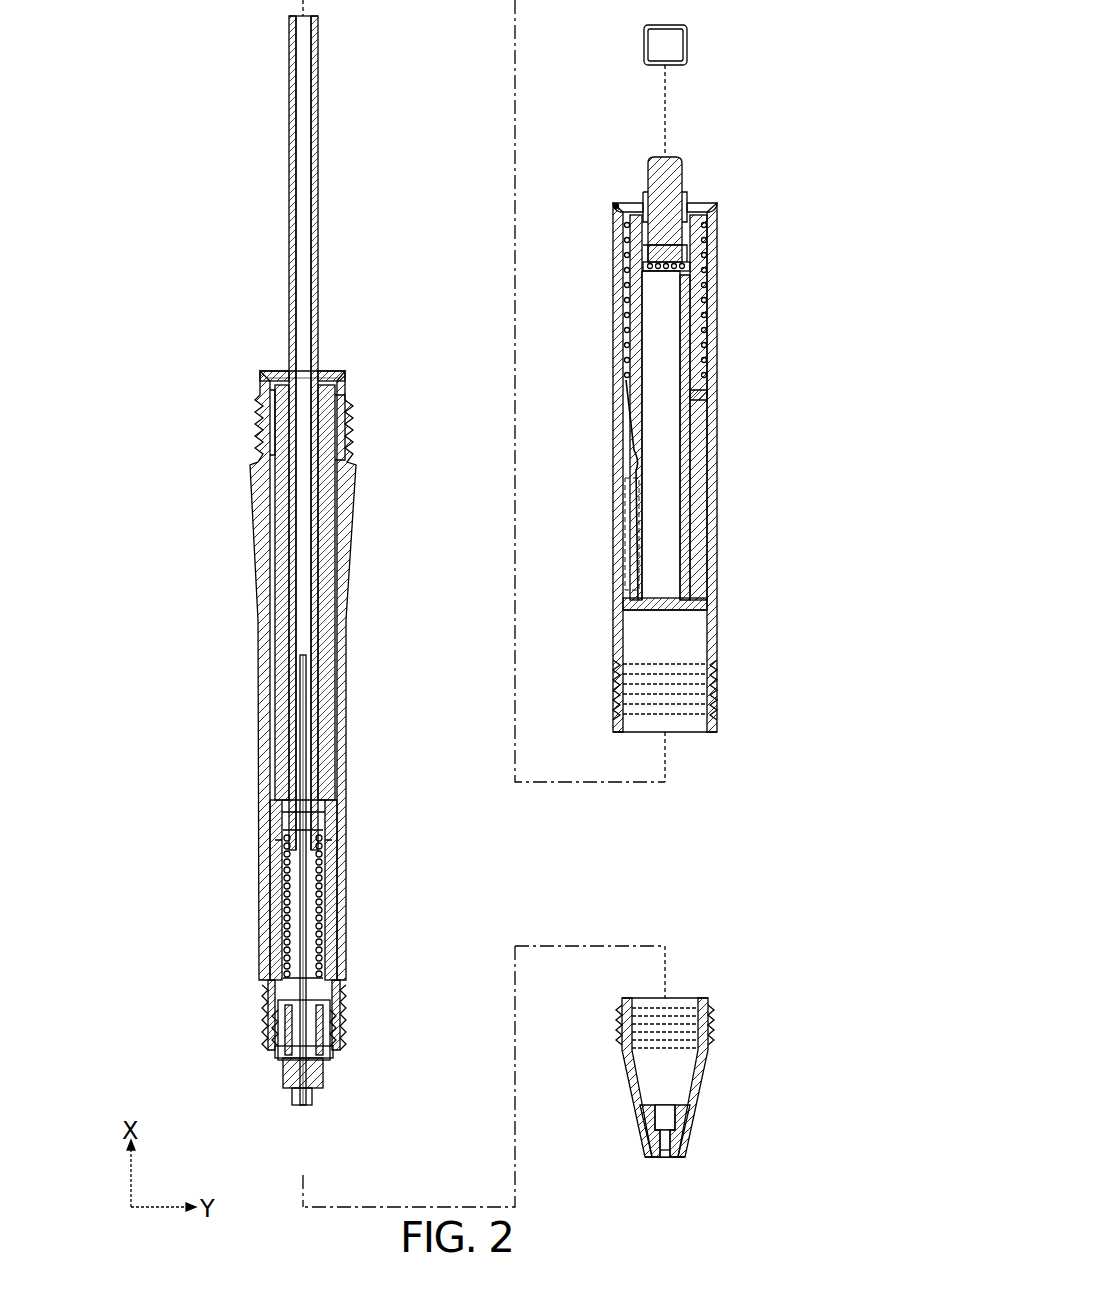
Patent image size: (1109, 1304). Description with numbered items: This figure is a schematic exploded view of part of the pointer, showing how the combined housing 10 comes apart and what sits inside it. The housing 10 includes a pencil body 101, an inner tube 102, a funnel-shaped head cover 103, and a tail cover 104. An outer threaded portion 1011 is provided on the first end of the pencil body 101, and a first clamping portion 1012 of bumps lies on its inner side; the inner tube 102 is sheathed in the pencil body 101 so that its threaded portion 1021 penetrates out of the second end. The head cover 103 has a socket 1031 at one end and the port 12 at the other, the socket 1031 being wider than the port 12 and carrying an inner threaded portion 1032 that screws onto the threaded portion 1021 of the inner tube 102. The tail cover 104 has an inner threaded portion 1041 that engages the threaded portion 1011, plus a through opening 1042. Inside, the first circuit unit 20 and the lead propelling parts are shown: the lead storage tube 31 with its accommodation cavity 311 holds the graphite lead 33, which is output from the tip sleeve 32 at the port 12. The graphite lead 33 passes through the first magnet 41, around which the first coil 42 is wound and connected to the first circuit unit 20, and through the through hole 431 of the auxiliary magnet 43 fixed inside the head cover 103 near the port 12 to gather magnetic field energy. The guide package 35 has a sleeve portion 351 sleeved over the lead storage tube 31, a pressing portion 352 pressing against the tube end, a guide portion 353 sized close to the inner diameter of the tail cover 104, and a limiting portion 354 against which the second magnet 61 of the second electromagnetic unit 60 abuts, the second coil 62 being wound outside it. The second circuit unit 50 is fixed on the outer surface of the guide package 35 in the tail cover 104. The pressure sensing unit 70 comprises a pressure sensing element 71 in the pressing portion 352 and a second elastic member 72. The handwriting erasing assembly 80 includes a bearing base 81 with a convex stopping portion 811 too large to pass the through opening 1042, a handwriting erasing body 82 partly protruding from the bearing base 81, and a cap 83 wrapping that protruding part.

The housing 10 is at (480, 772).
The pencil body 101 is at (338, 812).
The inner tube 102 is at (330, 868).
The head cover 103 is at (620, 1000).
The tail cover 104 is at (612, 722).
The threaded portion 1011 is at (340, 418).
The first clamping portion 1012 is at (345, 375).
The threaded portion 1021 is at (342, 1003).
The socket 1031 is at (708, 1002).
The threaded portion 1032 is at (706, 1016).
The threaded portion 1041 is at (700, 678).
The through opening 1042 is at (612, 209).
The port 12 is at (672, 1150).
The first circuit unit 20 is at (270, 673).
The lead storage tube 31 is at (318, 58).
The accommodation cavity 311 is at (303, 95).
The tip sleeve 32 is at (280, 1073).
The graphite lead 33 is at (308, 660).
The guide package 35 is at (784, 300).
The sleeve portion 351 is at (685, 329).
The pressing portion 352 is at (705, 305).
The guide portion 353 is at (705, 603).
The limiting portion 354 is at (707, 394).
The first magnet 41 is at (270, 1005).
The first coil 42 is at (275, 1040).
The auxiliary magnet 43 is at (690, 1110).
The through hole 431 is at (675, 1132).
The second circuit unit 50 is at (636, 553).
The second electromagnetic unit 60 is at (560, 297).
The second magnet 61 is at (630, 334).
The second coil 62 is at (625, 316).
The pressure sensing unit 70 is at (764, 233).
The pressure sensing element 71 is at (680, 265).
The second elastic member 72 is at (690, 250).
The handwriting erasing assembly 80 is at (782, 10).
The bearing base 81 is at (688, 195).
The convex stopping portion 811 is at (690, 217).
The handwriting erasing body 82 is at (680, 175).
The cap 83 is at (687, 38).